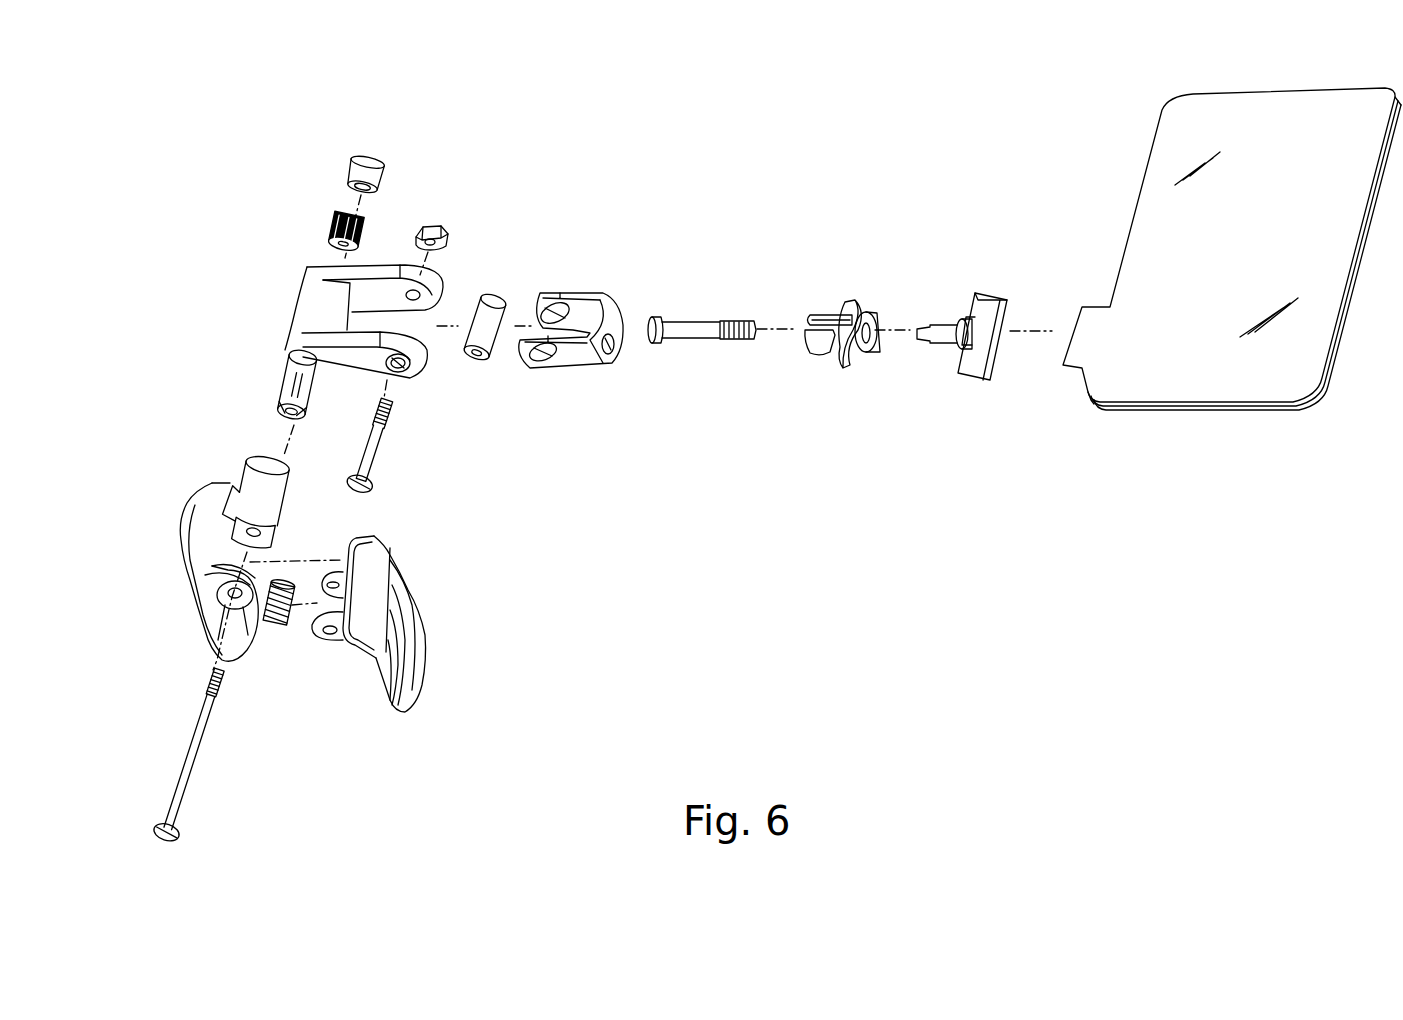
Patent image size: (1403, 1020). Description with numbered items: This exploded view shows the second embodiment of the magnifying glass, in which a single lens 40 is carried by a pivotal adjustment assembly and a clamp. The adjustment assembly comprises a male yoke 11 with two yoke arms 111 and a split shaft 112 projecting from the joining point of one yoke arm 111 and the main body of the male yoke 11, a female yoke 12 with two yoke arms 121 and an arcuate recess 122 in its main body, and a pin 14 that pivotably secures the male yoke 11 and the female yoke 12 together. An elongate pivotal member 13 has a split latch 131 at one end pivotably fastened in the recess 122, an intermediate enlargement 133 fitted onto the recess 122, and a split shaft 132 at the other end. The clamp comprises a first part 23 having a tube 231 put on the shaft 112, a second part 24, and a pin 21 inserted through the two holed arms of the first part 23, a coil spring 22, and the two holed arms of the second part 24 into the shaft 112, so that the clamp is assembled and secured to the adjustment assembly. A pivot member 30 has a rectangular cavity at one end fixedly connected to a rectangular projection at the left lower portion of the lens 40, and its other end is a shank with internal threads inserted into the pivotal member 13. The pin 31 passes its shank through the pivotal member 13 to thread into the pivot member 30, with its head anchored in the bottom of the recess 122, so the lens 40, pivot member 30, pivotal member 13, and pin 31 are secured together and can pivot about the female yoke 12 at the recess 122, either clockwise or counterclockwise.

The male yoke 11 is at (310, 322).
The yoke arms 111 is at (377, 267).
The split shaft 112 is at (292, 387).
The female yoke 12 is at (592, 417).
The yoke arms 121 is at (547, 357).
The arcuate recess 122 is at (617, 350).
The pivotal member 13 is at (869, 264).
The split latch 131 is at (815, 317).
The split shaft 132 is at (875, 317).
The intermediate enlargement 133 is at (860, 307).
The pin 14 is at (485, 307).
The pin 21 is at (192, 740).
The coil spring 22 is at (290, 630).
The first part 23 is at (187, 560).
The tube 231 is at (253, 480).
The second part 24 is at (427, 640).
The pivot member 30 is at (992, 300).
The pin 31 is at (700, 323).
The lens 40 is at (1202, 372).